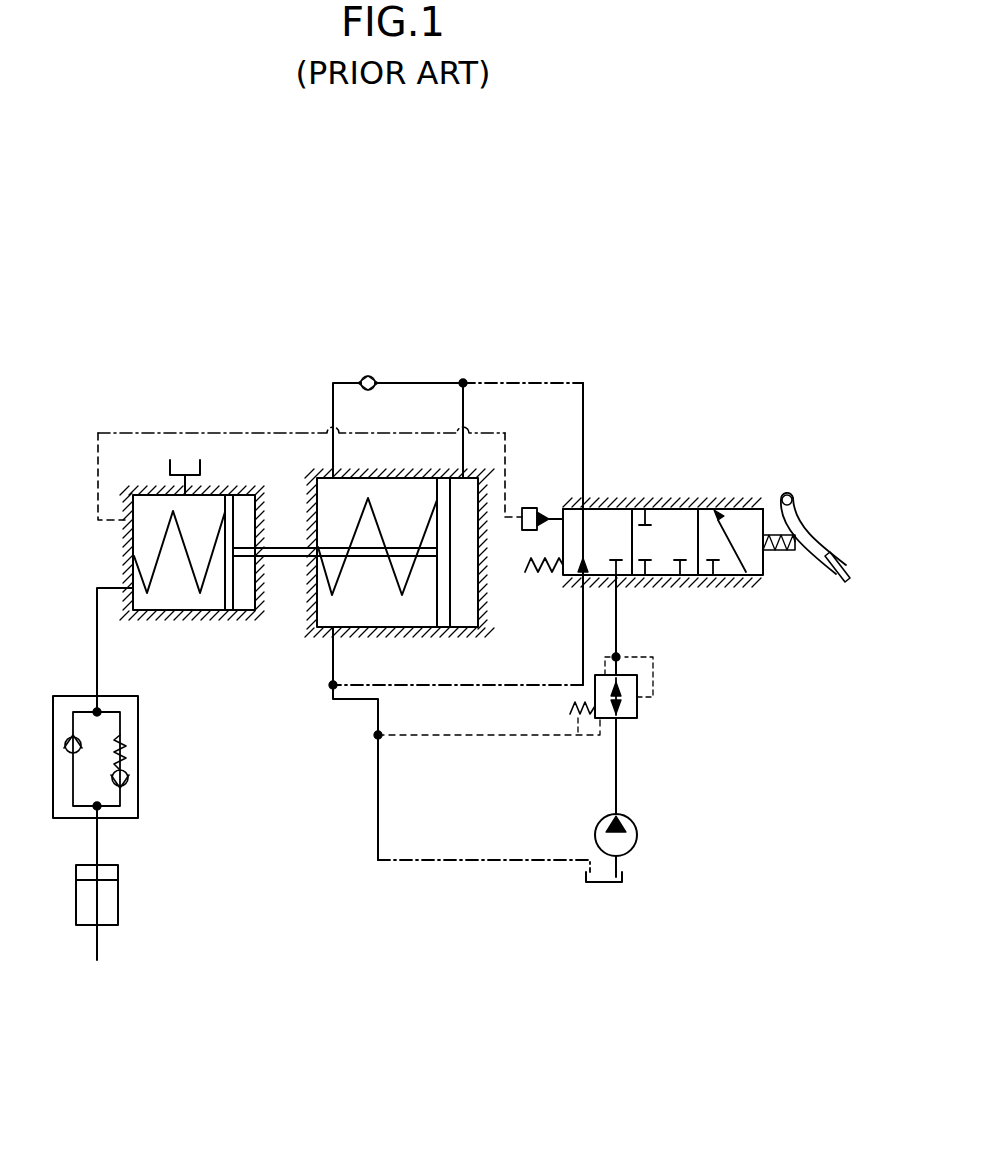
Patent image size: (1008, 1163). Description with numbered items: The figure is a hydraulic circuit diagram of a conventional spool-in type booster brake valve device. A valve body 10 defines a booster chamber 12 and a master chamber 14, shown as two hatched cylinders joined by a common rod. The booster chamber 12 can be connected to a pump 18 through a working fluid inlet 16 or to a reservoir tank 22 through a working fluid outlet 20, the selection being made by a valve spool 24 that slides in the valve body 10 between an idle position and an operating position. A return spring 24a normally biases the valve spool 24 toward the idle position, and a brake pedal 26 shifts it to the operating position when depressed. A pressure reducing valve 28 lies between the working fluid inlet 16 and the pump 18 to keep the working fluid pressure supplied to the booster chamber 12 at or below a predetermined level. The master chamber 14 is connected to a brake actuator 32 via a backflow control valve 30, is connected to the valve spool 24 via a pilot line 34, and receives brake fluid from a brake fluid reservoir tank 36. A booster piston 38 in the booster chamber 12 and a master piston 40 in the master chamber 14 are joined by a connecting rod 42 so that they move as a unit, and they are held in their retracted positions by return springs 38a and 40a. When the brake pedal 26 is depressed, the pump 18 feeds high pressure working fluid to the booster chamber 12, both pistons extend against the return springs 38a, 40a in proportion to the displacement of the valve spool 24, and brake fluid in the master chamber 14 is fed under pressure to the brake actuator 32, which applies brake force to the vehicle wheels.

The valve body 10 is at (258, 616).
The booster chamber 12 is at (488, 500).
The master chamber 14 is at (218, 600).
The working fluid inlet 16 is at (590, 588).
The pump 18 is at (637, 835).
The working fluid outlet 20 is at (620, 612).
The reservoir tank 22 is at (605, 888).
The valve spool 24 is at (672, 503).
The return spring 24a is at (538, 582).
The brake pedal 26 is at (830, 533).
The pressure reducing valve 28 is at (637, 715).
The backflow control valve 30 is at (138, 760).
The brake actuator 32 is at (118, 900).
The pilot line 34 is at (190, 433).
The brake fluid reservoir tank 36 is at (170, 466).
The booster piston 38 is at (437, 495).
The return spring 38a is at (393, 575).
The master piston 40 is at (232, 503).
The return spring 40a is at (185, 560).
The connecting rod 42 is at (290, 548).